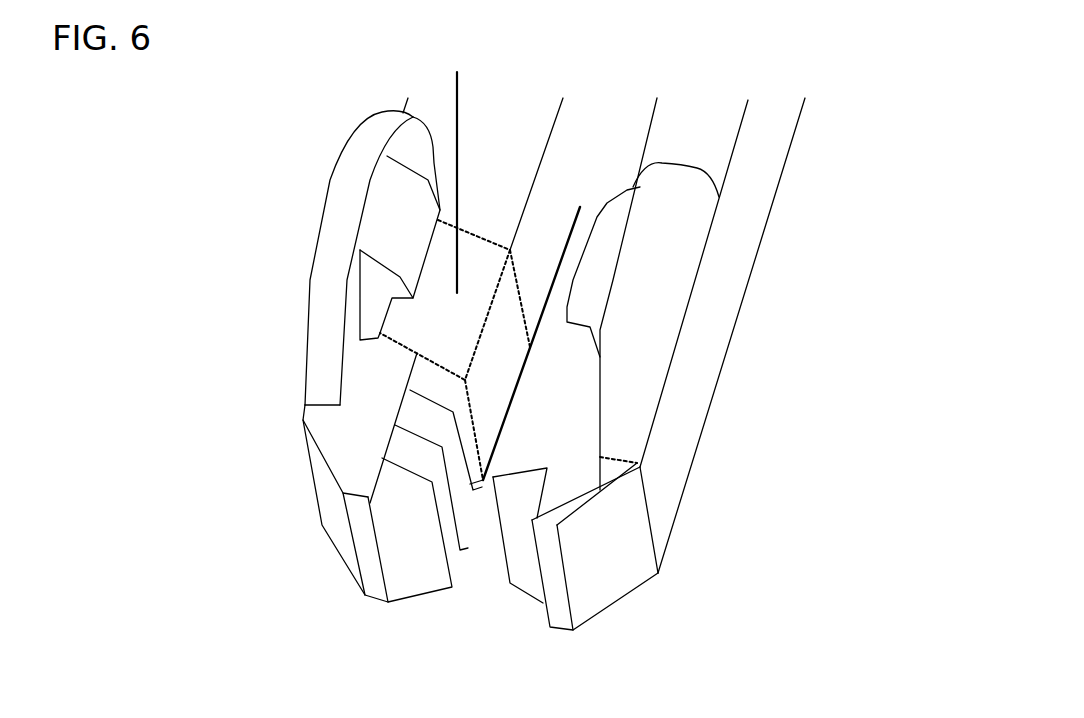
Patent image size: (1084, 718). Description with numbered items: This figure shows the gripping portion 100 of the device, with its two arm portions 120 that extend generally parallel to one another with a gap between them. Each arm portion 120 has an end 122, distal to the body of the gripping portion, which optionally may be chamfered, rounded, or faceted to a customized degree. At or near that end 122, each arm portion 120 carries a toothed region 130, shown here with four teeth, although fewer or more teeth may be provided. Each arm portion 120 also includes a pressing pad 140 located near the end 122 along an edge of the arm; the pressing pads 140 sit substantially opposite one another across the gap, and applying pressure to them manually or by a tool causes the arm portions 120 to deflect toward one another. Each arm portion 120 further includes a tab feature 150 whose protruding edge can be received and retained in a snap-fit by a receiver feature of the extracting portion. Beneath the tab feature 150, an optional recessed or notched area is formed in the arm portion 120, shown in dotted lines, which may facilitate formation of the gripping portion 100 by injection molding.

The gripping portion 100 is at (878, 103).
The arm portion 120 is at (512, 127).
The end 122 is at (330, 503).
The toothed region 130 is at (513, 540).
The pressing pad 140 is at (322, 310).
The tab feature 150 is at (393, 218).